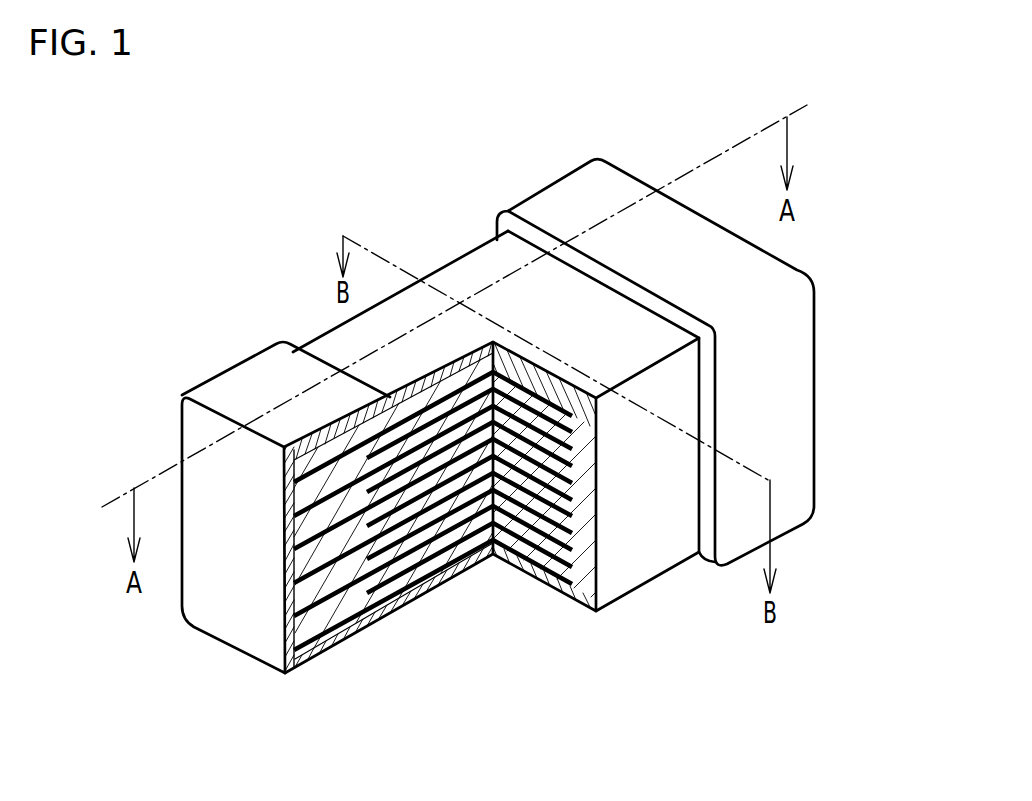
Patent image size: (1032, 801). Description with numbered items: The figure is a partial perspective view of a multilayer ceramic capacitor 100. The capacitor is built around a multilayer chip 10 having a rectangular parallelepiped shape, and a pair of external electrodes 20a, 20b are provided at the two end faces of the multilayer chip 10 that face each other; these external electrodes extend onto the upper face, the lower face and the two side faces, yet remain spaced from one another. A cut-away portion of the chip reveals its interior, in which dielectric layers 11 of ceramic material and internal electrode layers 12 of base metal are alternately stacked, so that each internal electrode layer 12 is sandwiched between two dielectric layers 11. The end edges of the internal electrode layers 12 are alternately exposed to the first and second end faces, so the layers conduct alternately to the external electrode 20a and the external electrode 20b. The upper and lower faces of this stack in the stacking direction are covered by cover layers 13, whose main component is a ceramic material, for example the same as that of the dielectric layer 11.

The multilayer ceramic capacitor 100 is at (868, 89).
The multilayer chip 10 is at (323, 312).
The dielectric layer 11 is at (457, 512).
The internal electrode layer 12 is at (402, 592).
The cover layer 13 is at (463, 279).
The external electrode 20a is at (213, 378).
The external electrode 20b is at (553, 203).